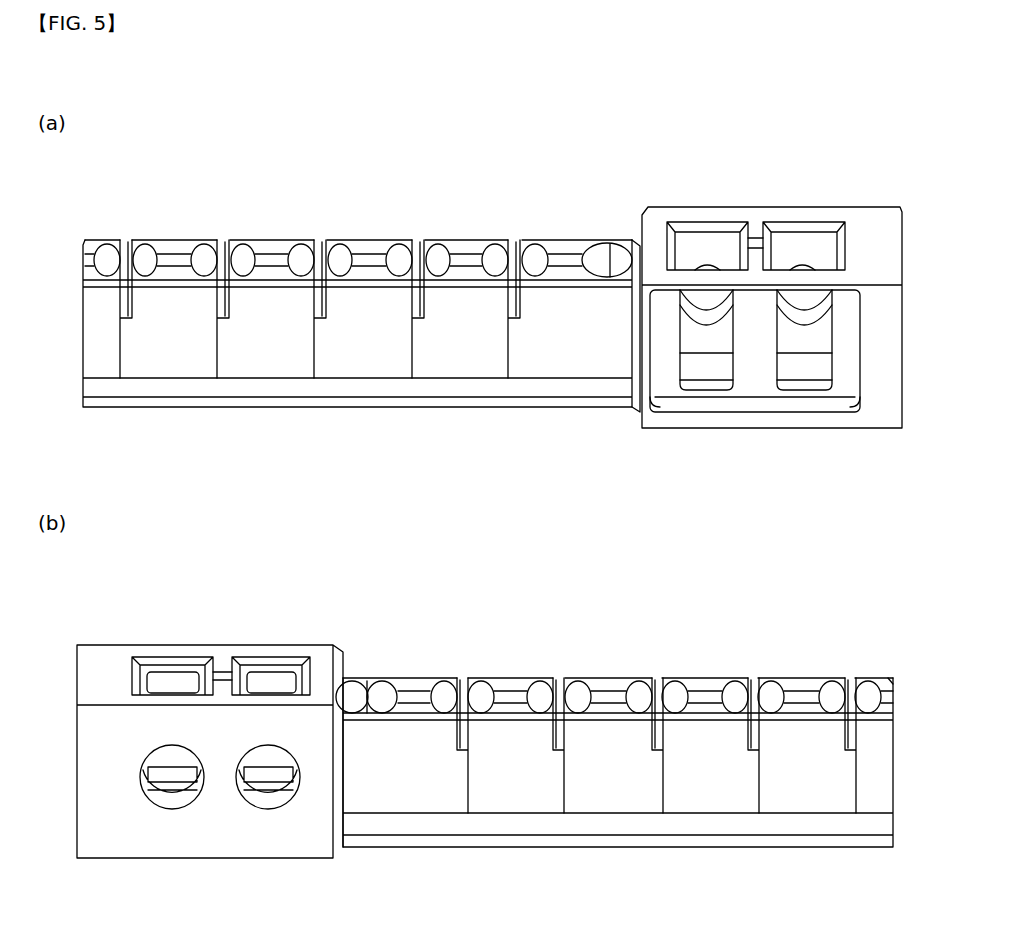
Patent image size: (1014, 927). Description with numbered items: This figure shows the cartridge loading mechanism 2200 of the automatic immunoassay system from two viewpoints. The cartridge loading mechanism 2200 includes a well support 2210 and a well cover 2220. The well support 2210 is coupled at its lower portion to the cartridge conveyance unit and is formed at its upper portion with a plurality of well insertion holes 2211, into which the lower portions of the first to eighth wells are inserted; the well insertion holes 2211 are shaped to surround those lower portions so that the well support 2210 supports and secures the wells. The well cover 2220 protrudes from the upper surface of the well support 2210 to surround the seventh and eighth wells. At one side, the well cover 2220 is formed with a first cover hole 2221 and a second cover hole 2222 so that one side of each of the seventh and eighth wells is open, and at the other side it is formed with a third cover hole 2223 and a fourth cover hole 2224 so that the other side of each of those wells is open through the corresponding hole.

The cartridge loading mechanism 2200 is at (77, 216).
The well support 2210 is at (346, 393).
The well insertion holes 2211 is at (625, 247).
The well cover 2220 is at (489, 556).
The first cover hole 2221 is at (708, 360).
The second cover hole 2222 is at (808, 368).
The third cover hole 2223 is at (175, 767).
The fourth cover hole 2224 is at (272, 767).